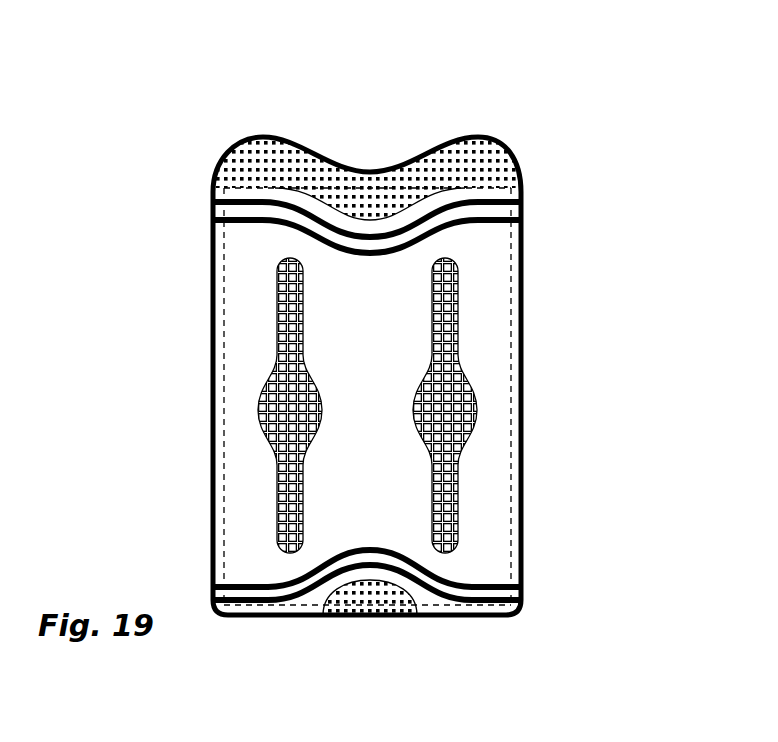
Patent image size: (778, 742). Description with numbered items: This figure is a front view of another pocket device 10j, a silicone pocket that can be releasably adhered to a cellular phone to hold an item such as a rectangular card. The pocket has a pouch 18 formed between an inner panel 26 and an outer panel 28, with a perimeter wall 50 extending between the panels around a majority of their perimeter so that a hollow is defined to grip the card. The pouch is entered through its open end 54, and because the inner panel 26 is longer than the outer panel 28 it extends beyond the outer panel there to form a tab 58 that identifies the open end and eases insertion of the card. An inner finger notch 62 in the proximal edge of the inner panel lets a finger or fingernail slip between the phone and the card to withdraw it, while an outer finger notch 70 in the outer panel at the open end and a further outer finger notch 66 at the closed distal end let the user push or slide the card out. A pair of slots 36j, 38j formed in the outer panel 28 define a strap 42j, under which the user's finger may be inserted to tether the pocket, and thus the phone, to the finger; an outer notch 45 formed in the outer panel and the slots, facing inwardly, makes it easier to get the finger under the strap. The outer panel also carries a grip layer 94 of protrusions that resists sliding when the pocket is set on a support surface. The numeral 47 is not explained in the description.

The pocket device 10j is at (548, 160).
The pouch 18 is at (512, 267).
The inner panel 26 is at (243, 160).
The outer panel 28 is at (230, 279).
The slot 36j is at (290, 327).
The slot 38j is at (458, 333).
The strap 42j is at (388, 475).
The outer notch 45 is at (462, 391).
The elastic pattern 47 is at (460, 410).
The perimeter wall 50 is at (525, 513).
The open end 54 is at (480, 185).
The tab 58 is at (275, 148).
The inner finger notch 62 is at (326, 158).
The outer finger notch 66 is at (403, 600).
The outer finger notch 70 is at (374, 192).
The grip layer 94 is at (472, 224).